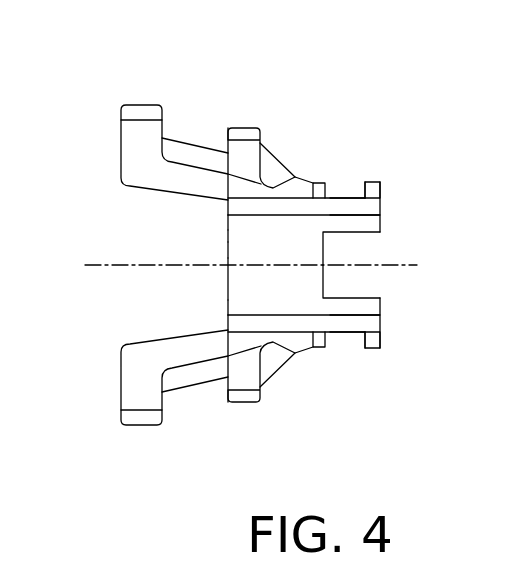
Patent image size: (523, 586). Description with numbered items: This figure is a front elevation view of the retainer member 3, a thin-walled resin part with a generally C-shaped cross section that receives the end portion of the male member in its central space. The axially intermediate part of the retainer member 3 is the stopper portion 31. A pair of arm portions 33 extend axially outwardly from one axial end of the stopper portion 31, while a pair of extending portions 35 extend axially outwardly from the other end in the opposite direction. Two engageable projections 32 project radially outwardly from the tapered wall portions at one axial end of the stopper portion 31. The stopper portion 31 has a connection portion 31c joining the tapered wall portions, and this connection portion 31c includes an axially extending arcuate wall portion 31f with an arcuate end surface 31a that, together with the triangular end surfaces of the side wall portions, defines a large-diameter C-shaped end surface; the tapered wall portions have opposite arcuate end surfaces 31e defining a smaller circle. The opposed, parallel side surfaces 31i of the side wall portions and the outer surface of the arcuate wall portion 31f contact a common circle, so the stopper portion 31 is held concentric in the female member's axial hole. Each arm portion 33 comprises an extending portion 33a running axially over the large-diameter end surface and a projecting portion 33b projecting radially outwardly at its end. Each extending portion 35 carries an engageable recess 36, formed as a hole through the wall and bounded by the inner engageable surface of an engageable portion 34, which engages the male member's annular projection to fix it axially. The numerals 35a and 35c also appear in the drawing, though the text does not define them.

The retainer member 3 is at (290, 119).
The stopper portion 31 is at (304, 160).
The arcuate end surface 31a is at (226, 283).
The connection portion 31c is at (217, 236).
The arcuate end surfaces 31e is at (328, 186).
The arcuate wall portion 31f is at (237, 248).
The side surfaces 31i is at (236, 220).
The engageable projections 32 is at (248, 127).
The arm portions 33 is at (142, 93).
The extending portions 33a is at (197, 148).
The projecting portions 33b is at (128, 104).
The engageable portion 34 is at (374, 190).
The extending portions 35 is at (352, 347).
The threaded shank 35a is at (354, 186).
The bolt head bore 35c is at (354, 218).
The engageable recesses 36 is at (363, 182).